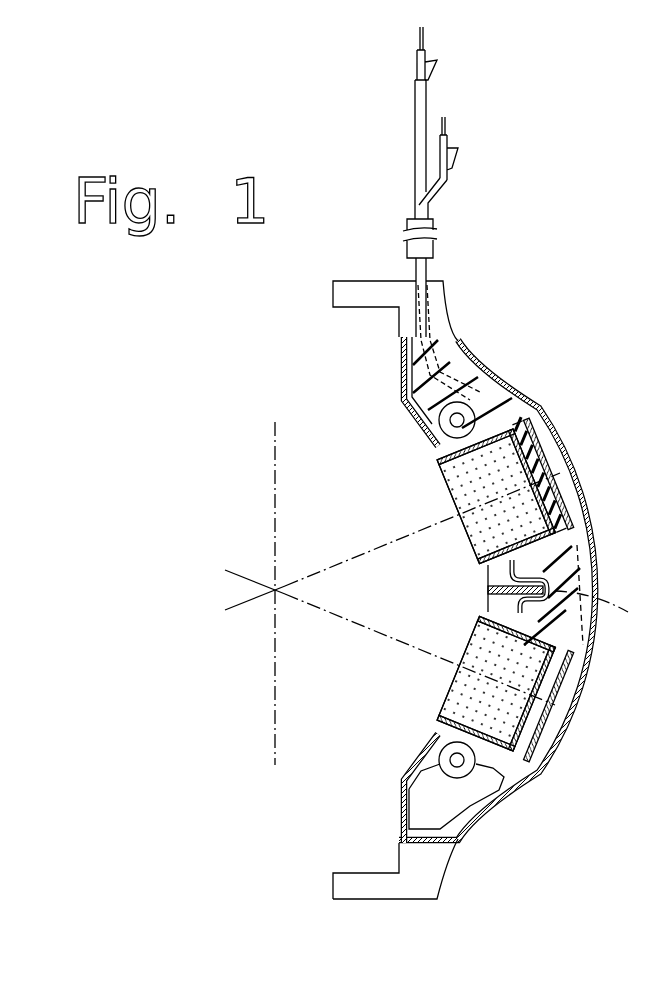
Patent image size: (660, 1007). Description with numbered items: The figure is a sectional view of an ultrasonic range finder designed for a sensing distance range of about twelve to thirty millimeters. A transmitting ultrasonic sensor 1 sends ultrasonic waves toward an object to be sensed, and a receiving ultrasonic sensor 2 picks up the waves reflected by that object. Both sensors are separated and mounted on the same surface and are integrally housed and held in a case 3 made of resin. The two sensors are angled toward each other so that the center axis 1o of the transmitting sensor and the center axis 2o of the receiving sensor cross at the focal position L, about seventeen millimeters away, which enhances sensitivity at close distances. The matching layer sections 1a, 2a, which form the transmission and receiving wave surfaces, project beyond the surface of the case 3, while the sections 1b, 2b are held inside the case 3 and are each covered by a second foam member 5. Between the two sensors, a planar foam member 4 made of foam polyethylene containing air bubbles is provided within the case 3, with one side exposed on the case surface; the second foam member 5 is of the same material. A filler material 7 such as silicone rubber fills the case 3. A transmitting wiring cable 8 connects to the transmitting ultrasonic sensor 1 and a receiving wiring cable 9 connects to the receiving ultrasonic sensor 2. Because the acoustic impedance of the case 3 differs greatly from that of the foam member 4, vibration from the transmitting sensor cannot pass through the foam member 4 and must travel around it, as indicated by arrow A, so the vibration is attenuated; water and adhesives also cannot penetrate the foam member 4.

The transmitting ultrasonic sensor 1 is at (288, 747).
The matching layer section of the transmitting ultrasonic sensor 1a is at (447, 692).
The held section of the transmitting ultrasonic sensor 1b is at (470, 702).
The center axis of the transmitting ultrasonic sensor 1o is at (376, 634).
The receiving ultrasonic sensor 2 is at (400, 450).
The matching layer section of the receiving ultrasonic sensor 2a is at (480, 507).
The held section of the receiving ultrasonic sensor 2b is at (462, 492).
The center axis of the receiving ultrasonic sensor 2o is at (332, 567).
The case 3 is at (578, 478).
The foam member 4 is at (487, 590).
The second foam member 5 is at (550, 522).
The filler material 7 is at (508, 412).
The transmitting wiring cable 8 is at (437, 193).
The receiving wiring cable 9 is at (412, 157).
The arrow A is at (602, 610).
The focal position L is at (273, 688).